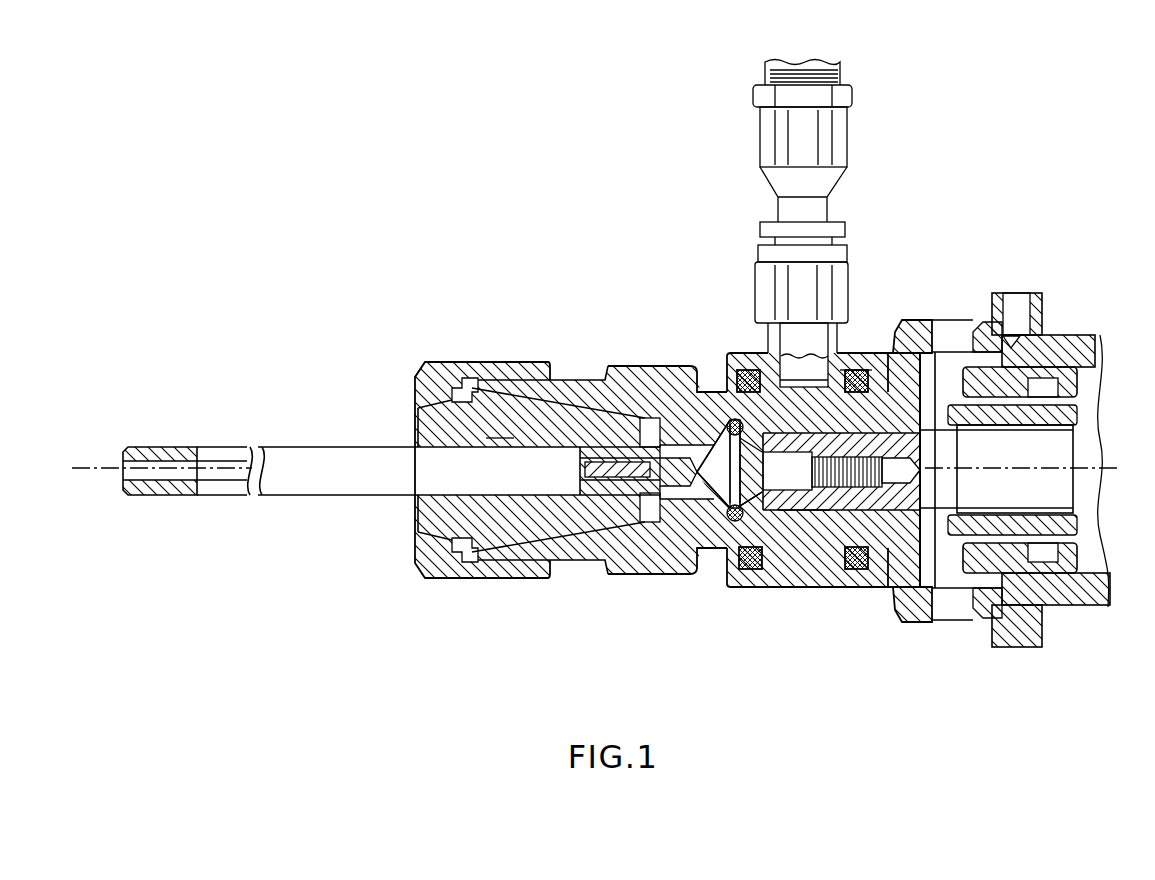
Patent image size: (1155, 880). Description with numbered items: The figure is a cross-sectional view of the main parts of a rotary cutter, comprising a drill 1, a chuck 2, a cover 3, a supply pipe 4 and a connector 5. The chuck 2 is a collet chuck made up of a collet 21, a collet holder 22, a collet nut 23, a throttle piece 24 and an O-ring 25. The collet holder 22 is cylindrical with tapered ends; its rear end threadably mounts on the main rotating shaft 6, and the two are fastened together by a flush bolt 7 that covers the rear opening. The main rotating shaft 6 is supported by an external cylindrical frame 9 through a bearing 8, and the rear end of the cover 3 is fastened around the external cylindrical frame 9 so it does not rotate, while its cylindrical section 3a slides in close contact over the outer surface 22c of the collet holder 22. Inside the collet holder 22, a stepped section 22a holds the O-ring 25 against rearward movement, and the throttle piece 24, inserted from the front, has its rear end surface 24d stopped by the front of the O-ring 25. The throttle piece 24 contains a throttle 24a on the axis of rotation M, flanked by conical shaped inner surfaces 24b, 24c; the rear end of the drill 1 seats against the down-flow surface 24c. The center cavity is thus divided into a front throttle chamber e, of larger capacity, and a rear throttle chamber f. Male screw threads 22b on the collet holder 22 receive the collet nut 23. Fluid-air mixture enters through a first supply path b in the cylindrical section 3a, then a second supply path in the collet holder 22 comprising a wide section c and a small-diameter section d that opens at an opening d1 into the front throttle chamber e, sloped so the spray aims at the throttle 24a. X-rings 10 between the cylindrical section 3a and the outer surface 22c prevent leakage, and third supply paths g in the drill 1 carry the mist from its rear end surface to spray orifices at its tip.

The drill 1 is at (335, 446).
The chuck 2 is at (578, 269).
The cover 3 is at (912, 330).
The cylindrical section 3a is at (853, 370).
The supply pipe 4 is at (864, 89).
The connector 5 is at (850, 282).
The main rotating shaft 6 is at (1055, 456).
The flush bolt 7 is at (792, 492).
The bearing 8 is at (1055, 389).
The external cylindrical frame 9 is at (1073, 333).
The X-ring 10 is at (857, 572).
The collet 21 is at (466, 470).
The collet holder 22 is at (642, 376).
The stepped section 22a is at (745, 590).
The male screw threads 22b is at (590, 380).
The outer surface 22c is at (866, 592).
The collet nut 23 is at (440, 376).
The throttle piece 24 is at (688, 418).
The throttle 24a is at (702, 474).
The conical shaped inner surface 24b is at (716, 478).
The conical shaped inner surface 24c is at (705, 480).
The rear end surface 24d is at (690, 400).
The O-ring 25 is at (744, 508).
The first supply path b is at (750, 372).
The wide section c is at (805, 545).
The small-diameter section d is at (770, 530).
The opening d1 is at (718, 522).
The front throttle chamber e is at (758, 550).
The rear throttle chamber f is at (690, 472).
The third supply path g is at (165, 476).
The axis of rotation M is at (1112, 472).